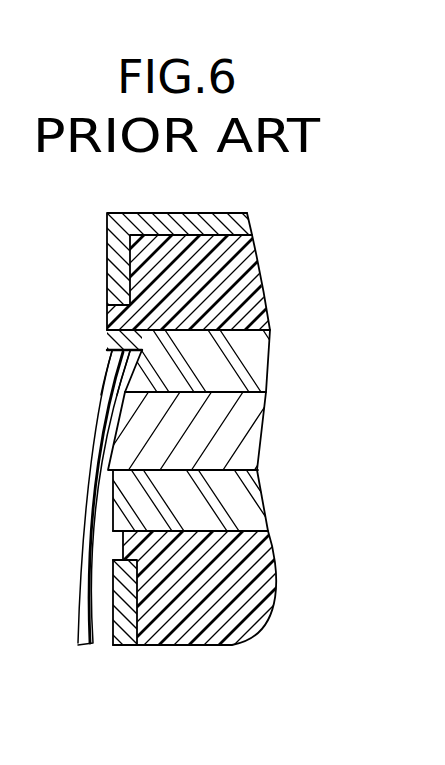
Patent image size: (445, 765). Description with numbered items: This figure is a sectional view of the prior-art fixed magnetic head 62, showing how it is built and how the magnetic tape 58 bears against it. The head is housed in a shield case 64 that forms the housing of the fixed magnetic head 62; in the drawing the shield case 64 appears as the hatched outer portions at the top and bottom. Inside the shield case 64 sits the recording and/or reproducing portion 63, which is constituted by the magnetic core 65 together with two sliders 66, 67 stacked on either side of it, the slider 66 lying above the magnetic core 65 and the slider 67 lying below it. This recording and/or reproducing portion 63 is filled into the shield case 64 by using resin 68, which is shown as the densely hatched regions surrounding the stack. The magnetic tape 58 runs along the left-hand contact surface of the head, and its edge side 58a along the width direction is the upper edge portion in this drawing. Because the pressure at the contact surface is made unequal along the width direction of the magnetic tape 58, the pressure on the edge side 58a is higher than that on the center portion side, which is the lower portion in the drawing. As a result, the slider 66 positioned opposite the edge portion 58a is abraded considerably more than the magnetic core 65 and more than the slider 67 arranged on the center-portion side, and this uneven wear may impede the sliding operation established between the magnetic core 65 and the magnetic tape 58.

The fixed magnetic head 62 is at (285, 240).
The recording and/or reproducing portion 63 is at (340, 344).
The shield case 64 is at (110, 255).
The magnetic core 65 is at (254, 432).
The slider 66 is at (254, 361).
The slider 67 is at (250, 499).
The resin 68 is at (246, 266).
The magnetic tape 58 is at (85, 500).
The edge side of the magnetic tape 58a is at (112, 352).